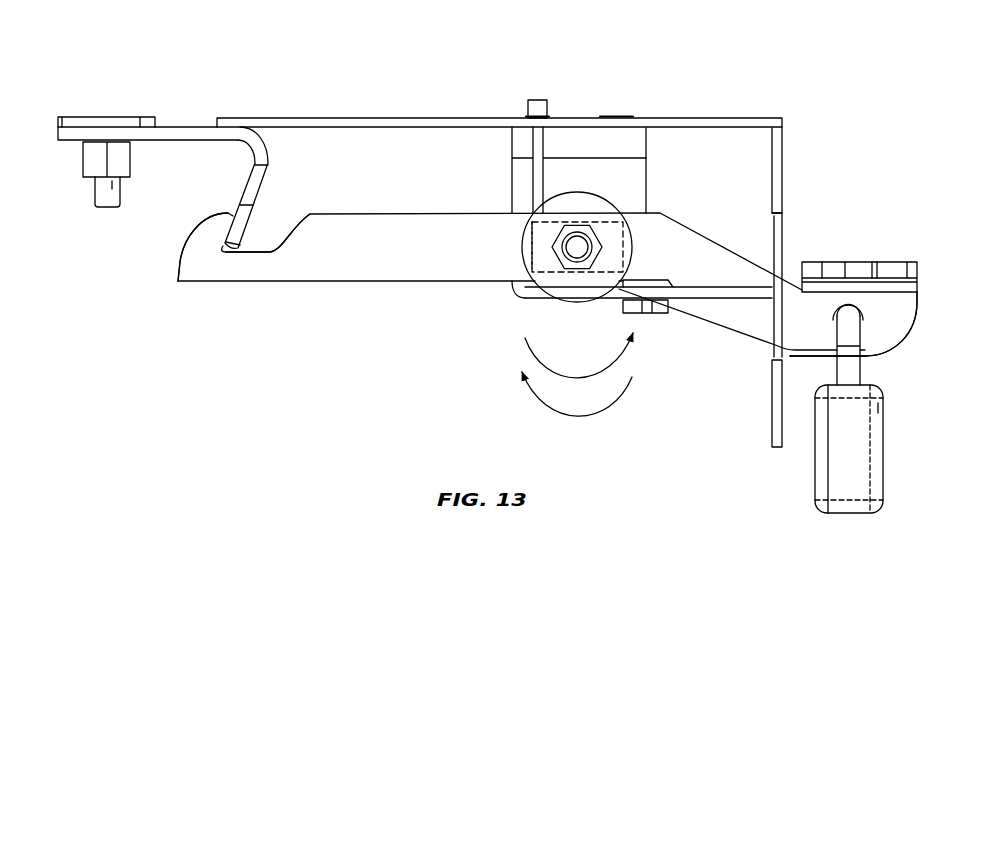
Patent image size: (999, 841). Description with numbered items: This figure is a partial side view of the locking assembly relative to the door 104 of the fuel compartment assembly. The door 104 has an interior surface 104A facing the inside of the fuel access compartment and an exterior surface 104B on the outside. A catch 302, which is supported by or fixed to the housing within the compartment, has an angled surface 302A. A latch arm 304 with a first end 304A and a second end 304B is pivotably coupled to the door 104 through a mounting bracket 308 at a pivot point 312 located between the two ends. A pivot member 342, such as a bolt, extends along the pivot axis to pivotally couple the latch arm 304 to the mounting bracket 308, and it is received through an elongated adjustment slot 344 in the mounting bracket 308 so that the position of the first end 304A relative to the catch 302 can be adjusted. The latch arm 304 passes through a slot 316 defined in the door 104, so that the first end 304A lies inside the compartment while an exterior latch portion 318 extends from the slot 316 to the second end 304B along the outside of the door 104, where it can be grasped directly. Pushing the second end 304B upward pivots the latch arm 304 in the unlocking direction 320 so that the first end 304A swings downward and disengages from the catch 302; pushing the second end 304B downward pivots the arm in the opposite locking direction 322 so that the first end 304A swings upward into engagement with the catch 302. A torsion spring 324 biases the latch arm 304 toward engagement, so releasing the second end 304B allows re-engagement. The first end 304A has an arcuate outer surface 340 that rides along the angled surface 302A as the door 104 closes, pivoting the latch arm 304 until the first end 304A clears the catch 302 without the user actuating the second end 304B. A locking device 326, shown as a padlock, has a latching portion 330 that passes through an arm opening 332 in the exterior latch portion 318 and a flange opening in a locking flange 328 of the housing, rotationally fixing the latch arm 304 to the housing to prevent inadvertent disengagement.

The door 104 is at (708, 114).
The interior surface of the door 104A is at (290, 130).
The exterior surface of the door 104B is at (784, 172).
The catch 302 is at (183, 122).
The angled surface 302A is at (253, 203).
The latch arm 304 is at (423, 234).
The first end of the latch arm 304A is at (178, 281).
The second end of the latch arm 304B is at (913, 321).
The mounting bracket 308 is at (583, 134).
The pivot point 312 is at (577, 248).
The slot 316 is at (781, 212).
The exterior latch portion 318 is at (885, 254).
The unlocking direction 320 is at (568, 372).
The locking direction 322 is at (582, 418).
The torsion spring 324 is at (685, 296).
The locking device 326 is at (852, 447).
The locking flange 328 is at (800, 364).
The latching portion 330 is at (855, 363).
The arm opening 332 is at (855, 303).
The arcuate outer surface 340 is at (185, 252).
The pivot member 342 is at (592, 232).
The adjustment slot 344 is at (532, 248).